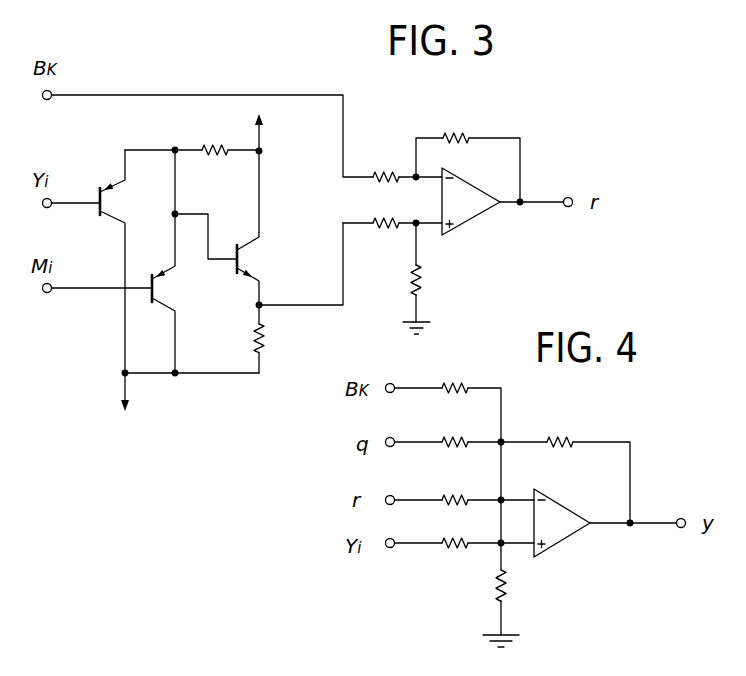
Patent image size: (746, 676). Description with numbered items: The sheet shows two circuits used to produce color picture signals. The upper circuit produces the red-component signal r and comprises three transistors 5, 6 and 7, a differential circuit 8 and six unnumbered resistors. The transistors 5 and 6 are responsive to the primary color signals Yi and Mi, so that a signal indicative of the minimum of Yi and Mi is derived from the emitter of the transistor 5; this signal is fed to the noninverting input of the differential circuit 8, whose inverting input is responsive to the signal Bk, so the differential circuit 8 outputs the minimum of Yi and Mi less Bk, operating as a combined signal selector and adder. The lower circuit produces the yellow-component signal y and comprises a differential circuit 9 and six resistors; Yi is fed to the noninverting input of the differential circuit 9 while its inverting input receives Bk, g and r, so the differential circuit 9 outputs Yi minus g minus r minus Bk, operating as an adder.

In FIG. 3, the transistor 5 is at (105, 186).
In FIG. 3, the transistor 6 is at (150, 277).
In FIG. 3, the transistor 7 is at (251, 262).
In FIG. 3, the differential circuit 8 is at (463, 228).
In FIG. 4, the differential circuit 9 is at (558, 538).